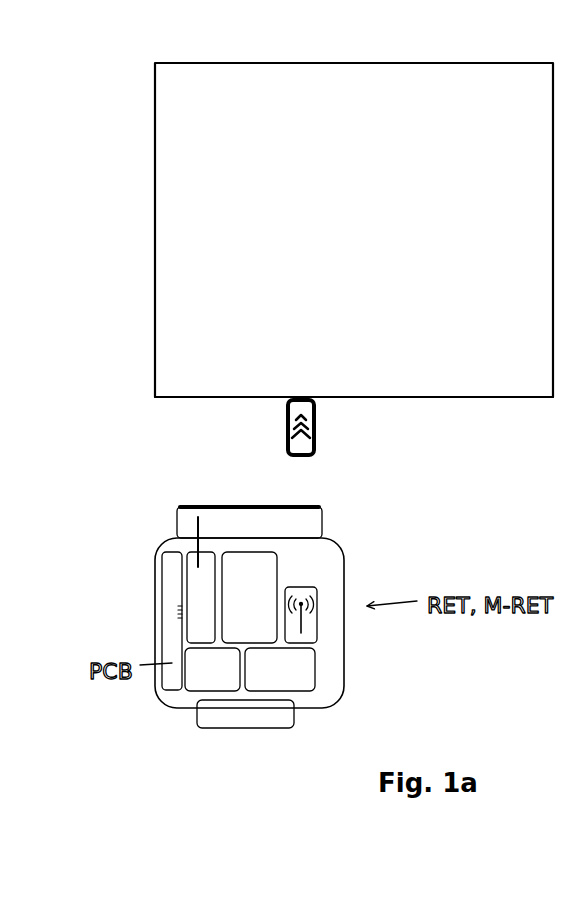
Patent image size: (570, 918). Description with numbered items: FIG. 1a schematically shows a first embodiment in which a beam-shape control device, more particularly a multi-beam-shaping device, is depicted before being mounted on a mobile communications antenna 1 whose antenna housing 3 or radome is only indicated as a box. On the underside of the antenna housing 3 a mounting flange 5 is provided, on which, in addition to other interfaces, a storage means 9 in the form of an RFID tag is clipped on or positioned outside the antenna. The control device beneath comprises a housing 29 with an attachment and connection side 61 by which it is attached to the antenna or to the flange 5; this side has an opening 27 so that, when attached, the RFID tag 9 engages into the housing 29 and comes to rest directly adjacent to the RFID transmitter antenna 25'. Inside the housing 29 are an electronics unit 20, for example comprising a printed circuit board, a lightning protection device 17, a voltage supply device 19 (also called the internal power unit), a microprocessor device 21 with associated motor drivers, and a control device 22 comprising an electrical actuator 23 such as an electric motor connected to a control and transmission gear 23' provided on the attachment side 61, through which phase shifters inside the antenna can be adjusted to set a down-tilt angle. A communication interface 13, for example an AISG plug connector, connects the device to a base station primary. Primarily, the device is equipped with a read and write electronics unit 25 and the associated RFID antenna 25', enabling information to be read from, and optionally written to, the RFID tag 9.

The antenna 1 is at (362, 157).
The antenna housing 3 is at (494, 60).
The mounting flange 5 is at (487, 398).
The storage means 9 is at (316, 430).
The communication interface 13 is at (217, 718).
The lightning protection device 17 is at (203, 668).
The voltage supply device 19 is at (290, 673).
The electronics unit 20 is at (165, 598).
The microprocessor device 21 is at (249, 597).
The control device 22 is at (167, 511).
The electrical actuator 23 is at (155, 597).
The control and transmission gear 23' is at (347, 519).
The read and write electronics unit 25 is at (348, 633).
The RFID transmitter antenna 25' is at (358, 578).
The opening 27 is at (294, 532).
The housing 29 is at (167, 548).
The attachment and connection side 61 is at (221, 532).